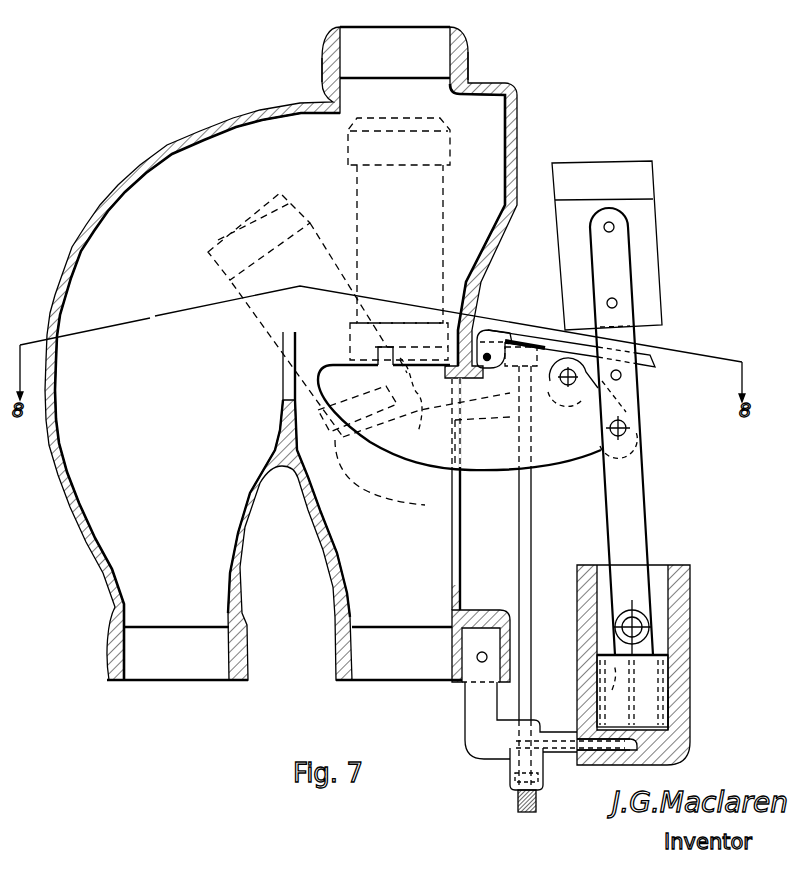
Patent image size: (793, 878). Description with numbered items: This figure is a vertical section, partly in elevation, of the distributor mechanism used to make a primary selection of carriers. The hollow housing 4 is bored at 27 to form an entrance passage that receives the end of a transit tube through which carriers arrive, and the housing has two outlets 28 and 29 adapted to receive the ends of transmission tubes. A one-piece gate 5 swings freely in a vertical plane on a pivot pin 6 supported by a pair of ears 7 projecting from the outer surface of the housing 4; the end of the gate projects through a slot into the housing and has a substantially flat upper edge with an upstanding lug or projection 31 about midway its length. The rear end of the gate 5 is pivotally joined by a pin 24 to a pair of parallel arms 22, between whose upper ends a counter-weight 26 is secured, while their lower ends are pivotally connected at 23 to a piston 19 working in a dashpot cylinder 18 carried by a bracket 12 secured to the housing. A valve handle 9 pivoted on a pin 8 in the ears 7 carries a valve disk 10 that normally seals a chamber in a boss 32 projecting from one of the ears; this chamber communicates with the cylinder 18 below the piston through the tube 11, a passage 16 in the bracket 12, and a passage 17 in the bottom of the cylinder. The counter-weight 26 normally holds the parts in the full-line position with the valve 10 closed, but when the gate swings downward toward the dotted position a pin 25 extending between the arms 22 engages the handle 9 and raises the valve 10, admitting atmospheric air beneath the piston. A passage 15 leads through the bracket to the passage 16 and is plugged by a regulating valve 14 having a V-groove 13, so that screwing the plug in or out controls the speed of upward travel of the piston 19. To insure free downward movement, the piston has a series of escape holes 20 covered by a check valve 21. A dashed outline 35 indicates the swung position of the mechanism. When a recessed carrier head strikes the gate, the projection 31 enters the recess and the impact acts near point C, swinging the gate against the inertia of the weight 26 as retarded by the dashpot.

The hollow housing 4 is at (108, 198).
The entrance passage 27 is at (328, 55).
The outlet 28 is at (145, 680).
The outlet 29 is at (382, 680).
The valve 35 is at (357, 193).
The lug or projection 31 is at (393, 351).
The one-piece gate 5 is at (487, 469).
The ears 7 is at (479, 333).
The pin 8 is at (487, 368).
The valve handle 9 is at (495, 330).
The valve disk 10 is at (545, 345).
The boss 32 is at (548, 370).
The pivot pin 6 is at (572, 387).
The tube 11 is at (532, 505).
The counter-weight 26 is at (662, 265).
The parallel arms 22 is at (648, 532).
The pin 25 is at (623, 375).
The pin 24 is at (614, 430).
The dashpot cylinder 18 is at (691, 682).
The piston 19 is at (672, 712).
The check valve 21 is at (668, 658).
The escape holes 20 is at (652, 673).
The pivotal connection 23 is at (642, 614).
The bracket 12 is at (476, 759).
The V-groove 13 is at (515, 786).
The regulating valve 14 is at (520, 812).
The passage 15 is at (543, 772).
The passage 16 is at (558, 752).
The passage 17 is at (618, 760).